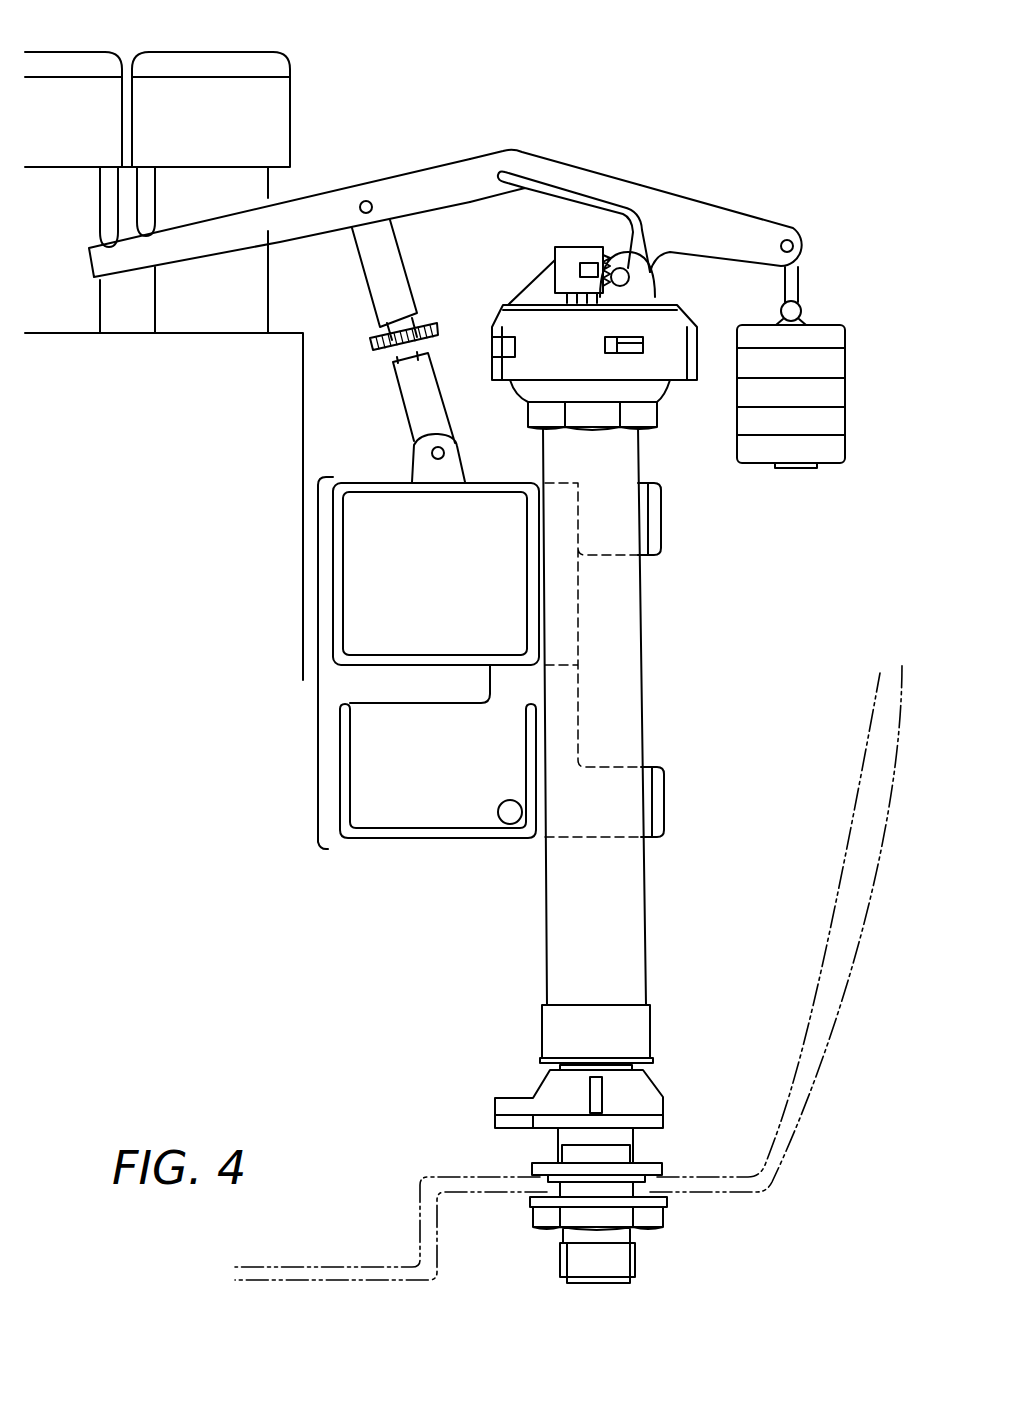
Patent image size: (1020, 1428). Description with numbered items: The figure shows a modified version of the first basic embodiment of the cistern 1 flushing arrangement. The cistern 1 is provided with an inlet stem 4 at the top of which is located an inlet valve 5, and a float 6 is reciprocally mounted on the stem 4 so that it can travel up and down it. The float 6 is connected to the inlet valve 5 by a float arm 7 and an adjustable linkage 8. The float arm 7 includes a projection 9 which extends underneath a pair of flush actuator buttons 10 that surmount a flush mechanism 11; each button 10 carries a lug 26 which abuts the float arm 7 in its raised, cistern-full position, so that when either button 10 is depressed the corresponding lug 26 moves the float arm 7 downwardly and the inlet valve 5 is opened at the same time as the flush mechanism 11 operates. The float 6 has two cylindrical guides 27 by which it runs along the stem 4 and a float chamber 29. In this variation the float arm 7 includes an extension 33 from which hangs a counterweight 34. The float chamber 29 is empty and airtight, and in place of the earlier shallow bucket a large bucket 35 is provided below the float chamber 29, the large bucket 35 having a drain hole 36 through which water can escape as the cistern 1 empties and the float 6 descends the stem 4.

The cistern 1 is at (853, 878).
The inlet stem 4 is at (565, 912).
The inlet valve 5 is at (665, 357).
The float 6 is at (320, 690).
The float arm 7 is at (543, 172).
The adjustable linkage 8 is at (390, 282).
The projection 9 is at (214, 237).
The flush actuator buttons 10 is at (196, 62).
The flush mechanism 11 is at (290, 420).
The lug 26 is at (148, 200).
The cylindrical guides 27 is at (662, 530).
The float chamber 29 is at (458, 598).
The extension 33 is at (738, 233).
The counterweight 34 is at (827, 447).
The large bucket 35 is at (400, 810).
The drain hole 36 is at (510, 800).